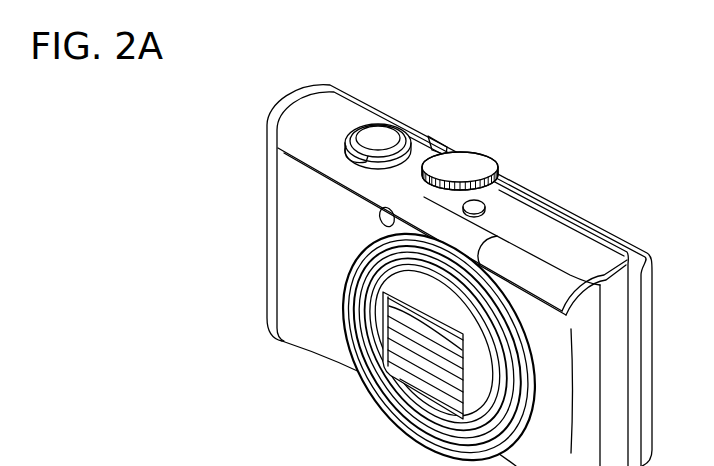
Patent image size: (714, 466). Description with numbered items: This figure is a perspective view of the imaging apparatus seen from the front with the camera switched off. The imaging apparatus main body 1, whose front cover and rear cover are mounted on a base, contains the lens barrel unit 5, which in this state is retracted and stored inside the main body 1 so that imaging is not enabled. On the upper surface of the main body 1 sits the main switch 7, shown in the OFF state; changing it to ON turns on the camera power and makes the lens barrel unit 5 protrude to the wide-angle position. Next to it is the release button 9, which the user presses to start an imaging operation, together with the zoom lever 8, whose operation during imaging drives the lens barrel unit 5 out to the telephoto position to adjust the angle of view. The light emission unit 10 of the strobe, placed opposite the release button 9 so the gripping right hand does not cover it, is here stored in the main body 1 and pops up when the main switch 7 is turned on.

The imaging apparatus main body 1 is at (293, 227).
The lens barrel unit 5 is at (381, 390).
The main switch 7 is at (486, 208).
The zoom lever 8 is at (343, 142).
The release button 9 is at (375, 138).
The light emission unit 10 is at (532, 262).